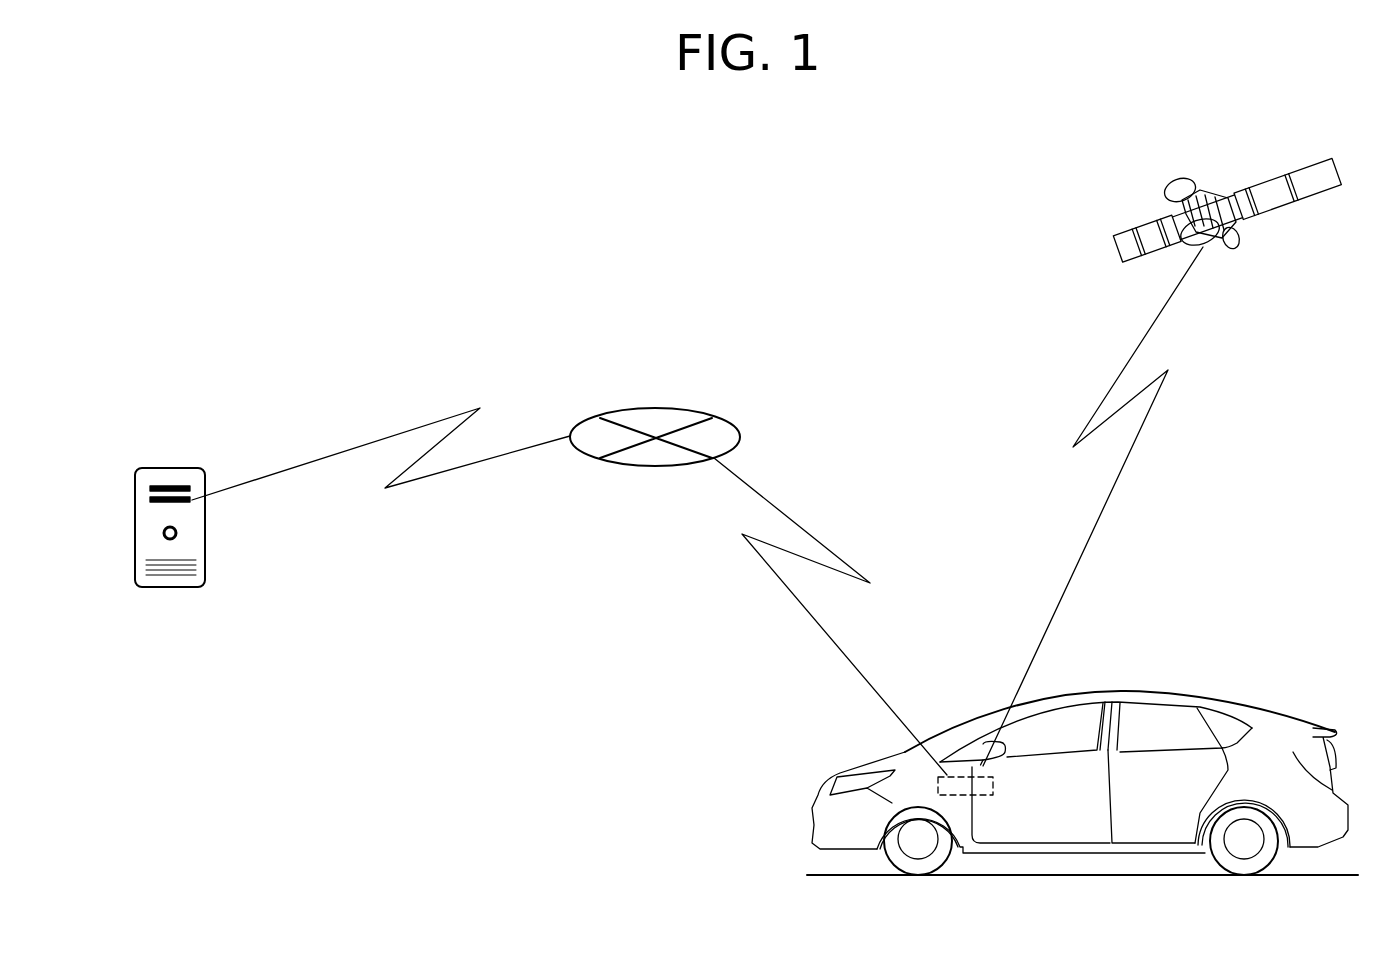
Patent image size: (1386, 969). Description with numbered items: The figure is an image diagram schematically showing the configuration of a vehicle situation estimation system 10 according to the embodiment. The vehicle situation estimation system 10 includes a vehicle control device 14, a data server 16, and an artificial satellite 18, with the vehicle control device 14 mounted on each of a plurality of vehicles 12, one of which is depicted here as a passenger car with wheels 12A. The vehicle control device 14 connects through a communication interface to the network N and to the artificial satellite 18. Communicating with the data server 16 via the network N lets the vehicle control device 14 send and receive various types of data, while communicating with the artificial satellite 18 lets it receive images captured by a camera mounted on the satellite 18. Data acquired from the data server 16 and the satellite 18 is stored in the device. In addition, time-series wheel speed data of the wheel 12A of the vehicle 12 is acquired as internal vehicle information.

The vehicle situation estimation system 10 is at (950, 201).
The vehicle 12 is at (1218, 682).
The wheel 12A is at (938, 852).
The vehicle control device 14 is at (995, 790).
The data server 16 is at (178, 468).
The artificial satellite 18 is at (1330, 180).
The network N is at (690, 411).